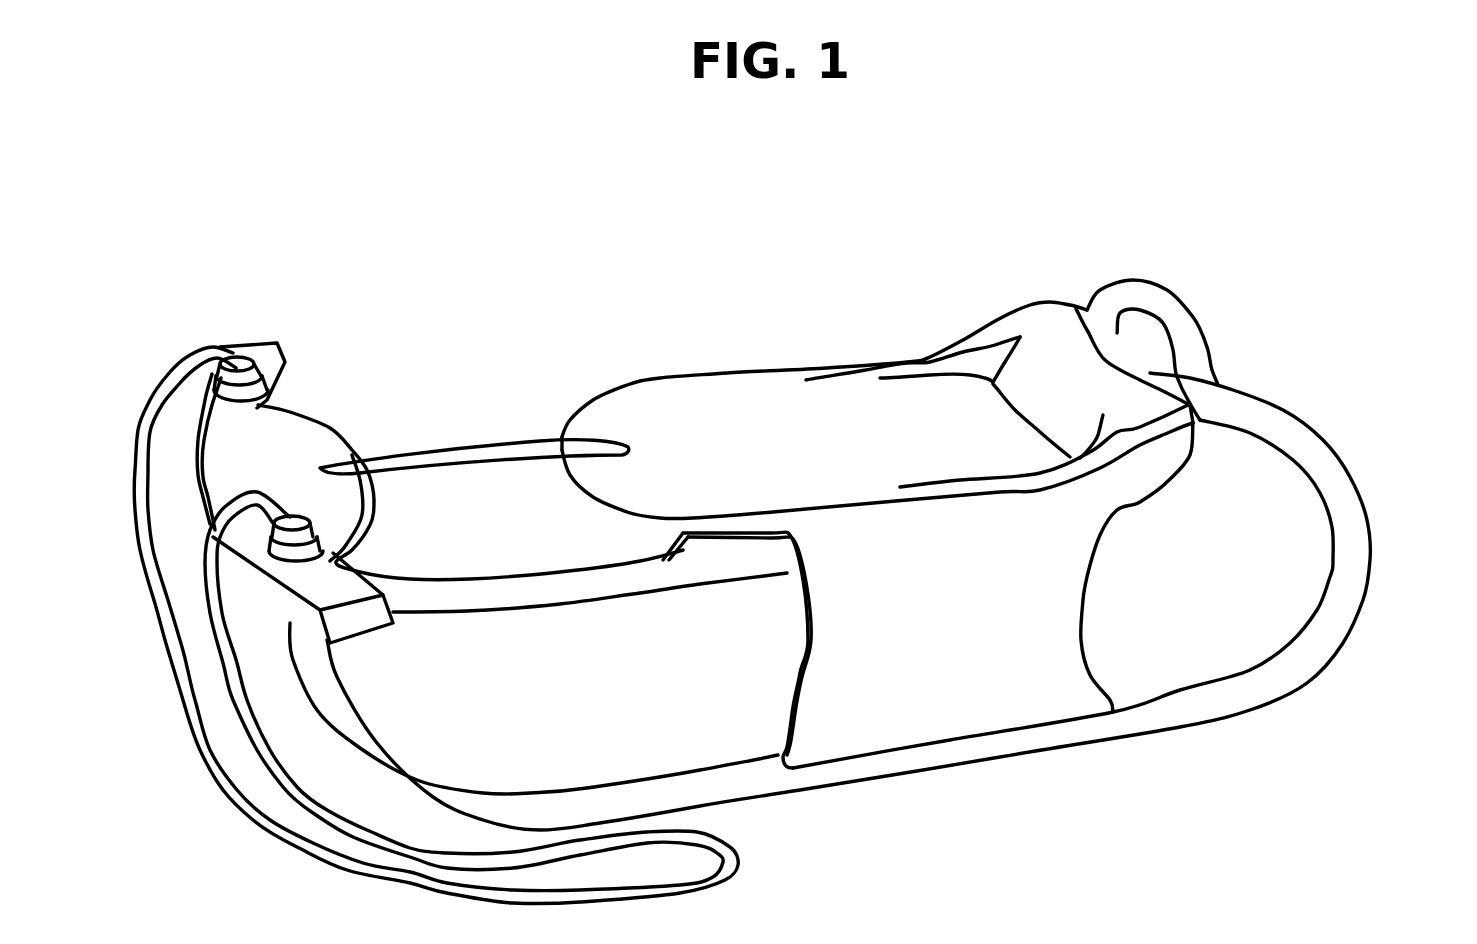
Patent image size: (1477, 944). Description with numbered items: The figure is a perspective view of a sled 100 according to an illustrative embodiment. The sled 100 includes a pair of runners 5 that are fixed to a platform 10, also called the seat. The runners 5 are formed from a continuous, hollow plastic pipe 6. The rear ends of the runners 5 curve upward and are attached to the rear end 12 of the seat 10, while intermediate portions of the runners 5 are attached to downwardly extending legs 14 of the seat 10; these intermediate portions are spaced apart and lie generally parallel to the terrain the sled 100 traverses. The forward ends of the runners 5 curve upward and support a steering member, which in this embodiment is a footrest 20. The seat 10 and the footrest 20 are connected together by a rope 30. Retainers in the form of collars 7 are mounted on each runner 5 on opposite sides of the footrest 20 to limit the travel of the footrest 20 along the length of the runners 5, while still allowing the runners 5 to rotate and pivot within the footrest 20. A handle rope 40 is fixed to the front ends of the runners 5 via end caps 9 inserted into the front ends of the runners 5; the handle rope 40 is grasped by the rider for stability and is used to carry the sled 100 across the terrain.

The sled 100 is at (1047, 182).
The platform 10 is at (693, 373).
The rear end 12 is at (1063, 314).
The hollow plastic pipe 6 is at (1383, 490).
The legs 14 is at (1080, 613).
The runners 5 is at (477, 578).
The footrest 20 is at (337, 430).
The rope 30 is at (467, 441).
The end caps 9 is at (260, 342).
The collars 7 is at (285, 379).
The handle rope 40 is at (200, 748).